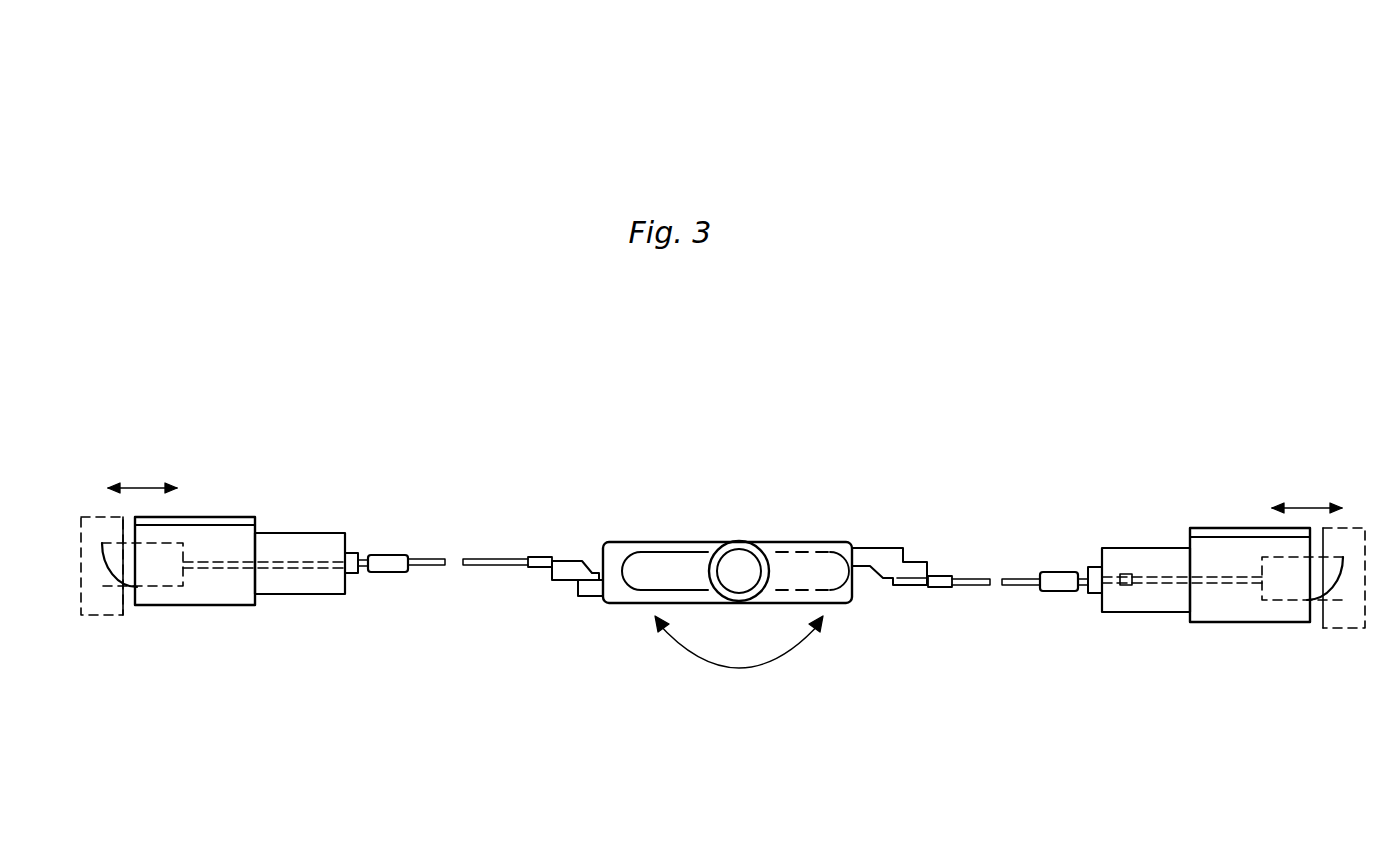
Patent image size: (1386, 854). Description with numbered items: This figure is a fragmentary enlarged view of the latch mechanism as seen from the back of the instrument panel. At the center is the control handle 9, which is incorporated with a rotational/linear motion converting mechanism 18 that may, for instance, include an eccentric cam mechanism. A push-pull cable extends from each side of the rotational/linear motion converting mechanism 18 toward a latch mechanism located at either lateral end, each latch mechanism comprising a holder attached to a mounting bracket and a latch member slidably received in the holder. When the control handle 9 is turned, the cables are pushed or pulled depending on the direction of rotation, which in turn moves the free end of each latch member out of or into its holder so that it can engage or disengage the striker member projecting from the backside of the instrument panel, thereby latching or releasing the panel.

The control handle 9 is at (683, 553).
The rotational/linear motion converting mechanism 18 is at (620, 545).